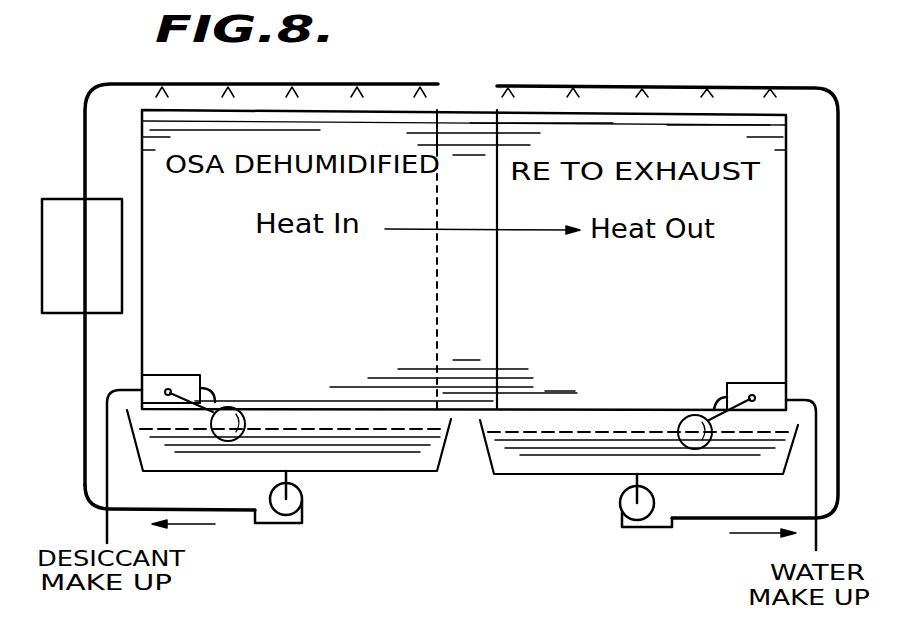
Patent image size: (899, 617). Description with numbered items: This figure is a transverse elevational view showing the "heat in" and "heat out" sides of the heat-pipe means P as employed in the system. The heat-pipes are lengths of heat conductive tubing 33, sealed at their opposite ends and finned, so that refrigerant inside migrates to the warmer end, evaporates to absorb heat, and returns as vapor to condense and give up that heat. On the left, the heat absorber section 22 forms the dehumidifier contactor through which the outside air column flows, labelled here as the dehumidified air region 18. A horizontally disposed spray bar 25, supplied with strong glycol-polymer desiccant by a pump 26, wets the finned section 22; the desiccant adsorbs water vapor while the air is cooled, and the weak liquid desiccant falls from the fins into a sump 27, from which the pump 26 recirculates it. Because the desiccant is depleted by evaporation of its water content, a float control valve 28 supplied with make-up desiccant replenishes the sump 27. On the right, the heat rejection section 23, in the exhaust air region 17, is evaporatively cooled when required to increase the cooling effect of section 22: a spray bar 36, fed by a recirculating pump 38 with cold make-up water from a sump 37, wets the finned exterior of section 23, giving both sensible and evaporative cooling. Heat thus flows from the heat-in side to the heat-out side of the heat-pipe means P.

The heat-pipe means P is at (468, 97).
The regeneration (exhaust) air section 17 is at (674, 200).
The dehumidification (supply) air section 18 is at (344, 195).
The heat absorber section 22 is at (375, 108).
The heat rejection section 23 is at (603, 112).
The spray bar 25 is at (328, 83).
The pump 26 is at (283, 522).
The sump 27 is at (373, 475).
The float control valve 28 is at (181, 375).
The heat conductive tubing 33 is at (167, 117).
The spray bar 36 is at (680, 87).
The sump 37 is at (518, 475).
The recirculating pump 38 is at (630, 528).